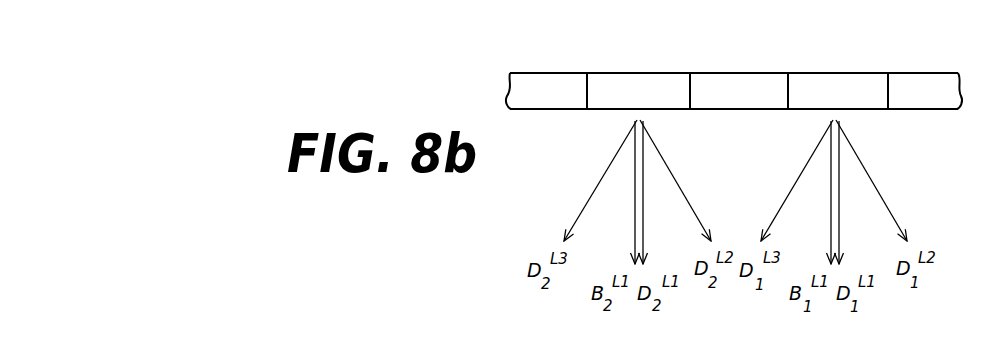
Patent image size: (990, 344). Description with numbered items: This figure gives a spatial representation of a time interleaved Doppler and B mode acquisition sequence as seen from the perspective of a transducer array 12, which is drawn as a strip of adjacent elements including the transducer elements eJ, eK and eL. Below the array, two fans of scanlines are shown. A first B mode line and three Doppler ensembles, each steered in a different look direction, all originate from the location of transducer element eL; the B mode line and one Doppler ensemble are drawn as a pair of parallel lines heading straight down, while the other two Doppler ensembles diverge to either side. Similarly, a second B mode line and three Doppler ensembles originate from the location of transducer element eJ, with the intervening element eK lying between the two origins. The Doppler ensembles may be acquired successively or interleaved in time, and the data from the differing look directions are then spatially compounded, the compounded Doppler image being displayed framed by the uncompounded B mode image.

The transducer array 12 is at (542, 82).
The transducer element eJ is at (633, 82).
The transducer element eK is at (732, 84).
The transducer element eL is at (840, 80).